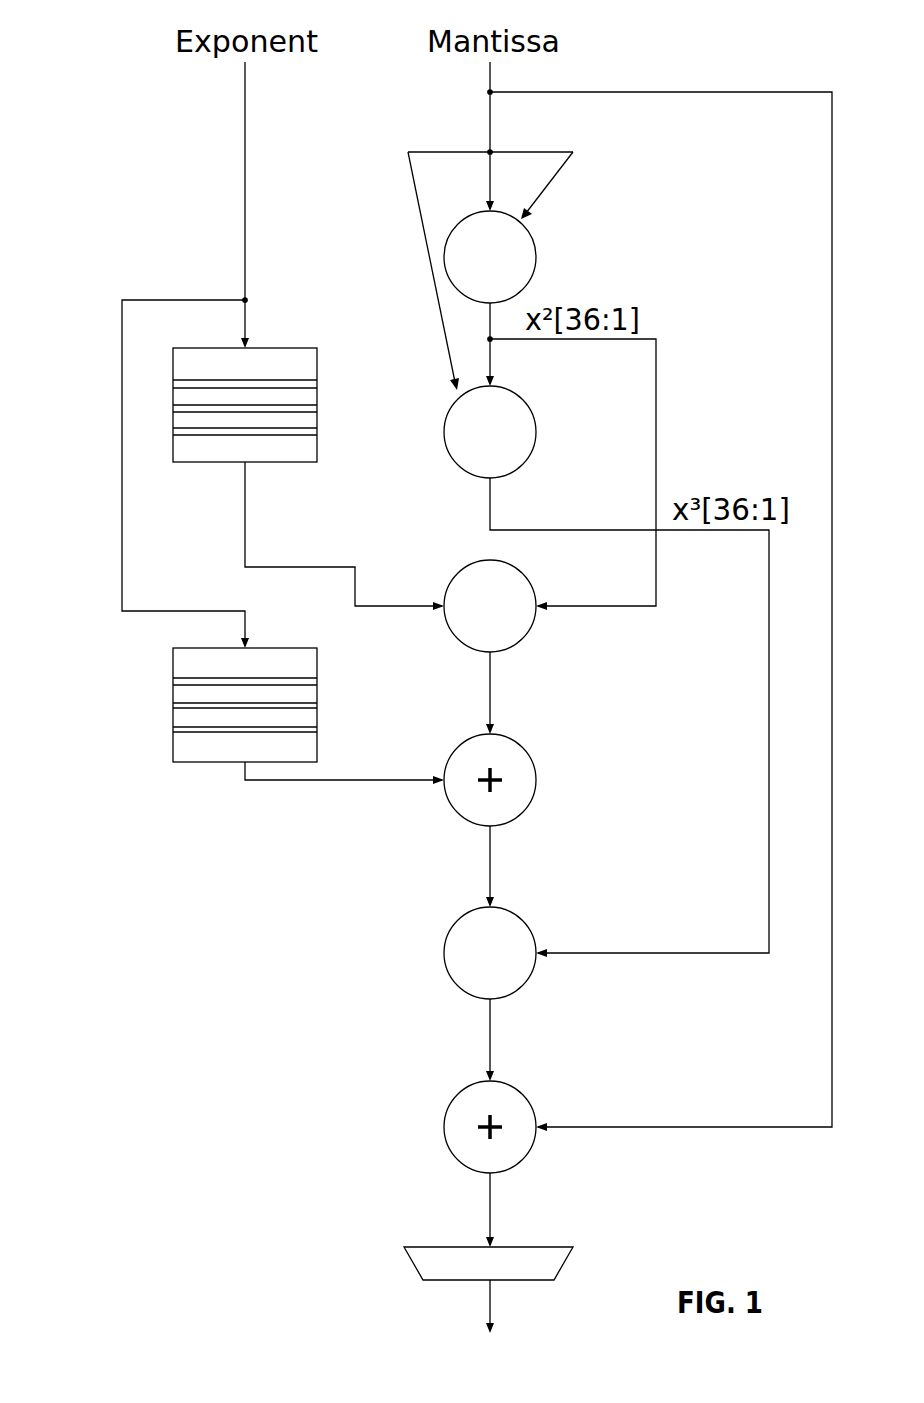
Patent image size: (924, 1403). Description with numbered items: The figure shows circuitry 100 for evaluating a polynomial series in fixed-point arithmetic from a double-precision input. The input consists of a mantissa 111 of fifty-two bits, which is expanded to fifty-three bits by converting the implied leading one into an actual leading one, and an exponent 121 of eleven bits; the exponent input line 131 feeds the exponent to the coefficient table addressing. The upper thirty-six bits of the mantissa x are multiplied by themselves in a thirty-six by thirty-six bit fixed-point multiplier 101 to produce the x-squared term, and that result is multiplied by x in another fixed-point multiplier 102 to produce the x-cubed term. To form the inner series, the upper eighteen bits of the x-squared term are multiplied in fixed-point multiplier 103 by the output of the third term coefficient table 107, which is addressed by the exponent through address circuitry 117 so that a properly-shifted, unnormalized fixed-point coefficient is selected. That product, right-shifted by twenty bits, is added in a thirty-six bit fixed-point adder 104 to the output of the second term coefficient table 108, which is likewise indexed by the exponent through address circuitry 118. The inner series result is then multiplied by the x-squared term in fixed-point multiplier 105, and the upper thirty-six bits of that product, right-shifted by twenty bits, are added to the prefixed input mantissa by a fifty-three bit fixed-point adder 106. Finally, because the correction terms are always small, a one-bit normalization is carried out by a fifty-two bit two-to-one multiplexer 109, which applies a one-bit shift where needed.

The circuitry 100 is at (133, 33).
The 36×36 bit fixed-point multiplier 101 is at (524, 230).
The 36×36 bit fixed-point multiplier 102 is at (524, 402).
The fixed point multiplier 103 is at (524, 574).
The 36-bit fixed-point adder 104 is at (524, 747).
The 36×36-bit fixed-point multiplier 105 is at (524, 920).
The 53-bit fixed point adder 106 is at (524, 1094).
The third term coefficient table 107 is at (173, 388).
The second term coefficient table 108 is at (173, 694).
The 52-bit 2:1 multiplexer 109 is at (505, 1247).
The 52-bit mantissa 111 is at (257, 96).
The address circuitry 117 is at (245, 405).
The address circuitry 118 is at (219, 531).
The 11-bit exponent 121 is at (490, 70).
The exponent input line 131 is at (245, 92).